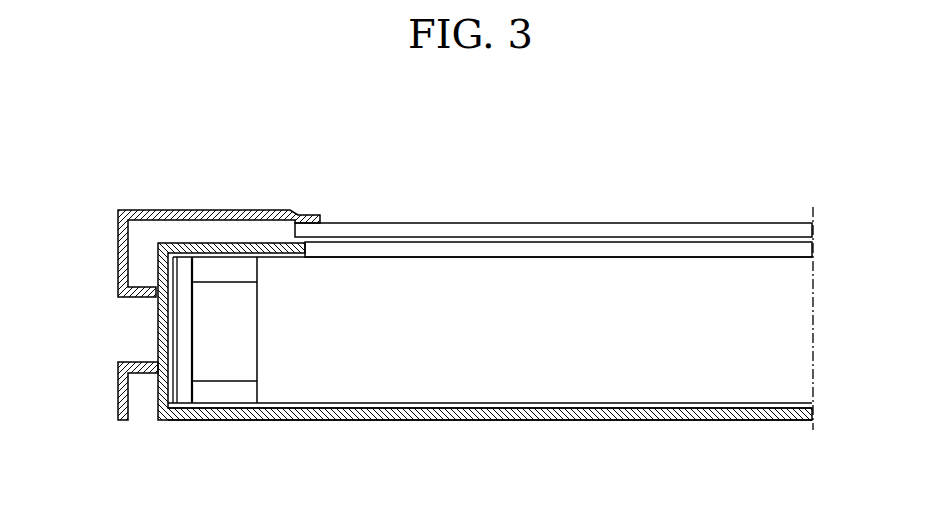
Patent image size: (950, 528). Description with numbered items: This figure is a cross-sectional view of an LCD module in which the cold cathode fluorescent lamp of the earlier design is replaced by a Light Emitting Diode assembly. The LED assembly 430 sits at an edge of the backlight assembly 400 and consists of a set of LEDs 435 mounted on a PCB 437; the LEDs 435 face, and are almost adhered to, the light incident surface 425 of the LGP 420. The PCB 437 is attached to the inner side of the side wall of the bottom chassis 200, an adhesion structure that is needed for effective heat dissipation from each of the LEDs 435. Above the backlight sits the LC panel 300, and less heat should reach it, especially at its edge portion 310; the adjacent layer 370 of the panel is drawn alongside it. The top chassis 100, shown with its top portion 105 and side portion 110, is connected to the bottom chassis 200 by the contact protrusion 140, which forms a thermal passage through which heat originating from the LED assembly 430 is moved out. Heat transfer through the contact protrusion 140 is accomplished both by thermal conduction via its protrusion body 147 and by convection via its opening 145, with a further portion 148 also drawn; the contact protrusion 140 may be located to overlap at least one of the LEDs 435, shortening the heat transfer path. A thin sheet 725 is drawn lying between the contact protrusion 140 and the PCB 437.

The top chassis 100 is at (57, 202).
The top portion of top chassis 105 is at (165, 209).
The side portion of top chassis 110 is at (118, 228).
The contact protrusion 140 is at (57, 308).
The protrusion body 147 is at (135, 298).
The opening 145 is at (134, 339).
The second supporting portion of mold frame 148 is at (133, 362).
The bottom chassis 200 is at (520, 420).
The LC panel 300 is at (482, 141).
The edge portion 310 is at (345, 206).
The second substrate 370 is at (537, 206).
The backlight assembly 400 is at (872, 248).
The LGP 420 is at (795, 380).
The light incident surface 425 is at (260, 345).
The LED assembly 430 is at (813, 250).
The LEDs 435 is at (238, 358).
The PCB 437 is at (188, 373).
The reflective sheet 725 is at (173, 387).